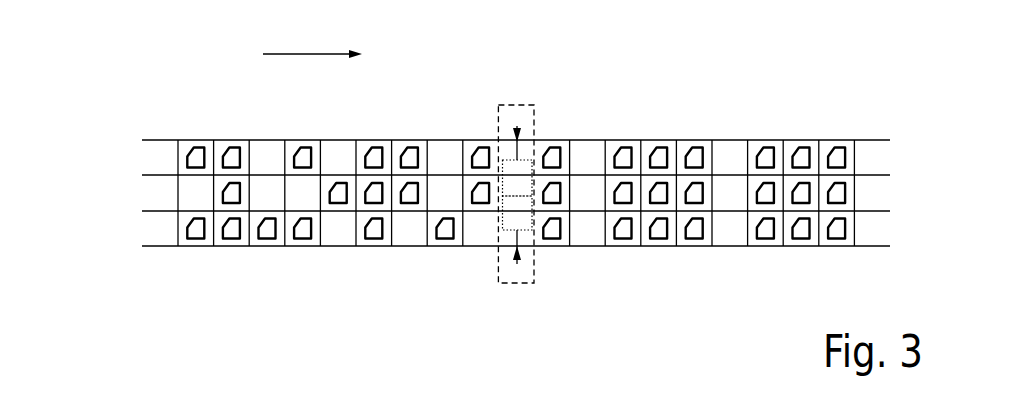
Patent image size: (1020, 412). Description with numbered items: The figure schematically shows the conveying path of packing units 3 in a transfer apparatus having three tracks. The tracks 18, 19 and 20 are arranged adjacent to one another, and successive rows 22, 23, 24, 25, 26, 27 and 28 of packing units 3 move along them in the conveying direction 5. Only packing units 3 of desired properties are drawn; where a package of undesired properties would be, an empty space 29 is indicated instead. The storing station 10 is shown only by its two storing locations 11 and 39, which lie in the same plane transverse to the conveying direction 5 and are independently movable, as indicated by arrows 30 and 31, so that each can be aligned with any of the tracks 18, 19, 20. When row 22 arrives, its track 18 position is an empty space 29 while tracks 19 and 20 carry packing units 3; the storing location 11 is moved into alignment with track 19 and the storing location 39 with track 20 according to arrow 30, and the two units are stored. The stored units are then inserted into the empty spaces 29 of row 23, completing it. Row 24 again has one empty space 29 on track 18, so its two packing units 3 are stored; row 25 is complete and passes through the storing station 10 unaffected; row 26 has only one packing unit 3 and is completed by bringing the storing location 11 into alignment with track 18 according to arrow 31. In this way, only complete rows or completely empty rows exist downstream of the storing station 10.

The packing unit 3 is at (310, 154).
The conveying direction 5 is at (318, 52).
The storing station 10 is at (515, 80).
The storing location 11 is at (520, 217).
The first track 18 is at (130, 228).
The second track 19 is at (130, 193).
The third track 20 is at (130, 158).
The row 22 is at (477, 262).
The row 23 is at (442, 262).
The row 24 is at (407, 262).
The row 25 is at (371, 262).
The row 26 is at (335, 262).
The row 27 is at (299, 262).
The row 28 is at (263, 262).
The empty space 29 is at (450, 197).
The arrow 30 is at (518, 150).
The arrow 31 is at (521, 231).
The storing location 39 is at (517, 182).